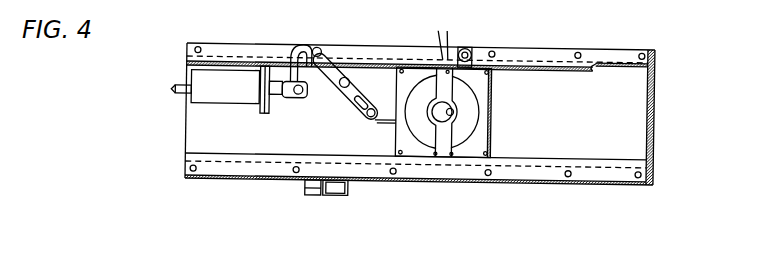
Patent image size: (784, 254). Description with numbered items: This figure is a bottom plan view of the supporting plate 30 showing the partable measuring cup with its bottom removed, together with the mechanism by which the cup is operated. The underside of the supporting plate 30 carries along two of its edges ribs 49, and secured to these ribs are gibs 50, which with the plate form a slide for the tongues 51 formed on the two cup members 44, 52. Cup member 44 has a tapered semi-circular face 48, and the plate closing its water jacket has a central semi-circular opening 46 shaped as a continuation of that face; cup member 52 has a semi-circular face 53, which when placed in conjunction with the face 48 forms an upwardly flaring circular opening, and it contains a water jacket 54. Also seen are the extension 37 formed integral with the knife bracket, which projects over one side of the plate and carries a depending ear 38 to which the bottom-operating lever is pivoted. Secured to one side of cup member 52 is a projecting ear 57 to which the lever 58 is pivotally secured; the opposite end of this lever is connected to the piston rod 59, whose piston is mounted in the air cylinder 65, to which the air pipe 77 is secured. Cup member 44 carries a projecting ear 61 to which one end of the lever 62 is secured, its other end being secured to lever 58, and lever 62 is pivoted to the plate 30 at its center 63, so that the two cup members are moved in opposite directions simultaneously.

The supporting plate 30 is at (647, 128).
The extension 37 is at (310, 181).
The depending ear 38 is at (312, 188).
The cup member 44 is at (418, 150).
The central semi-circular opening 46 is at (417, 130).
The tapered semi-circular face 48 is at (450, 154).
The ribs 49 is at (657, 49).
The gibs 50 is at (587, 47).
The tongues 51 is at (442, 34).
The cup member 52 is at (487, 128).
The semi-circular face 53 is at (454, 109).
The water jacket 54 is at (475, 116).
The projecting ear 57 is at (471, 50).
The lever 58 is at (380, 44).
The piston rod 59 is at (280, 98).
The projecting ear 61 is at (390, 115).
The lever 62 is at (348, 95).
The center 63 is at (351, 80).
The air cylinder 65 is at (195, 72).
The air pipe 77 is at (180, 90).